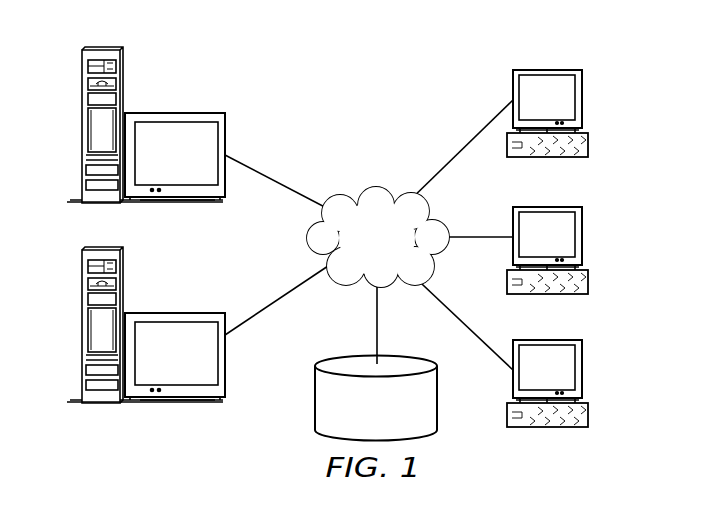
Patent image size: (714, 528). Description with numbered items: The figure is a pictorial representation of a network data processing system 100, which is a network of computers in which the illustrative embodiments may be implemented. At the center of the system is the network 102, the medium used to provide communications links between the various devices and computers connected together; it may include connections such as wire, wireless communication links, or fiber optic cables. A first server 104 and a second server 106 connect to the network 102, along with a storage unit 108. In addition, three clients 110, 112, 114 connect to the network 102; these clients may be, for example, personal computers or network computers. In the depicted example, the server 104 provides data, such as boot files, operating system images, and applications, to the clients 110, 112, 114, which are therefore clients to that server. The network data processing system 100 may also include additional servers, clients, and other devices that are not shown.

The network data processing system 100 is at (428, 87).
The network 102 is at (350, 188).
The server 104 is at (83, 128).
The server 106 is at (83, 328).
The storage unit 108 is at (315, 407).
The client 110 is at (582, 100).
The client 112 is at (582, 237).
The client 114 is at (582, 370).